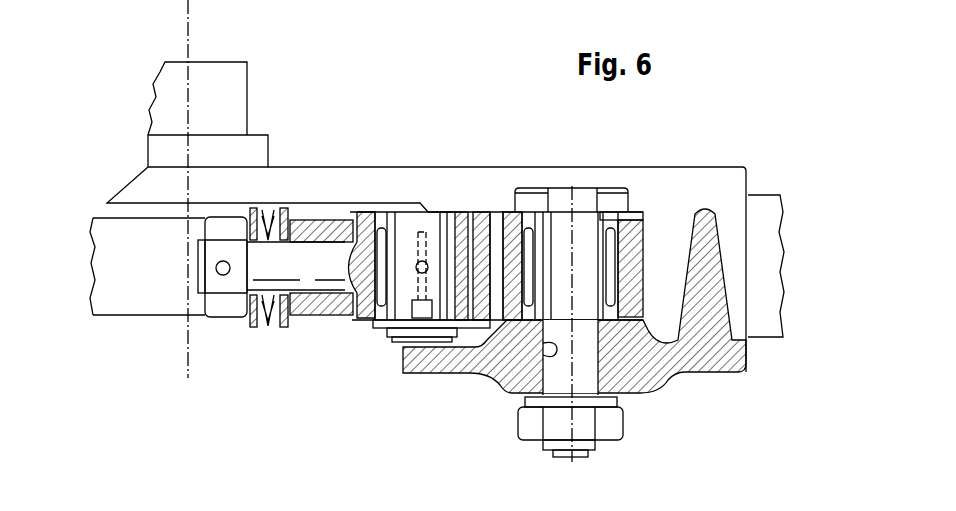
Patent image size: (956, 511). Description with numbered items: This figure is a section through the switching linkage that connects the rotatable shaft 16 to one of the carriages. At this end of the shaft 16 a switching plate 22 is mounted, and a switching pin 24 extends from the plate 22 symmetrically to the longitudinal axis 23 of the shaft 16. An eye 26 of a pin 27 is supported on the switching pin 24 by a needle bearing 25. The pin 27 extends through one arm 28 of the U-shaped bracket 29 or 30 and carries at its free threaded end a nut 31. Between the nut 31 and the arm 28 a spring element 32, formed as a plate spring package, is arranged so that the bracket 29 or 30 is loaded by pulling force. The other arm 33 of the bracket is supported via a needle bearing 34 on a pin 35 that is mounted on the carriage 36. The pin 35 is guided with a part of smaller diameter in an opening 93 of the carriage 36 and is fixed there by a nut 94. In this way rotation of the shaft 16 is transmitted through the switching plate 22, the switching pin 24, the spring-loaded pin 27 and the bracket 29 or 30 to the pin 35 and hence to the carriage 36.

The shaft 16 is at (247, 100).
The switching plate 22 is at (347, 178).
The longitudinal axis 23 is at (192, 19).
The switching pin 24 is at (435, 223).
The needle bearing 25 is at (397, 253).
The eye 26 is at (380, 247).
The pin 27 is at (338, 319).
The arm 28 is at (316, 227).
The U-shaped bracket 29 is at (312, 319).
The U-shaped bracket 30 is at (127, 319).
The nut 31 is at (210, 320).
The spring element 32 is at (265, 327).
The arm 33 is at (645, 219).
The needle bearing 34 is at (620, 253).
The pin 35 is at (557, 230).
The carriage 36 is at (697, 376).
The opening 93 is at (540, 350).
The nut 94 is at (520, 434).